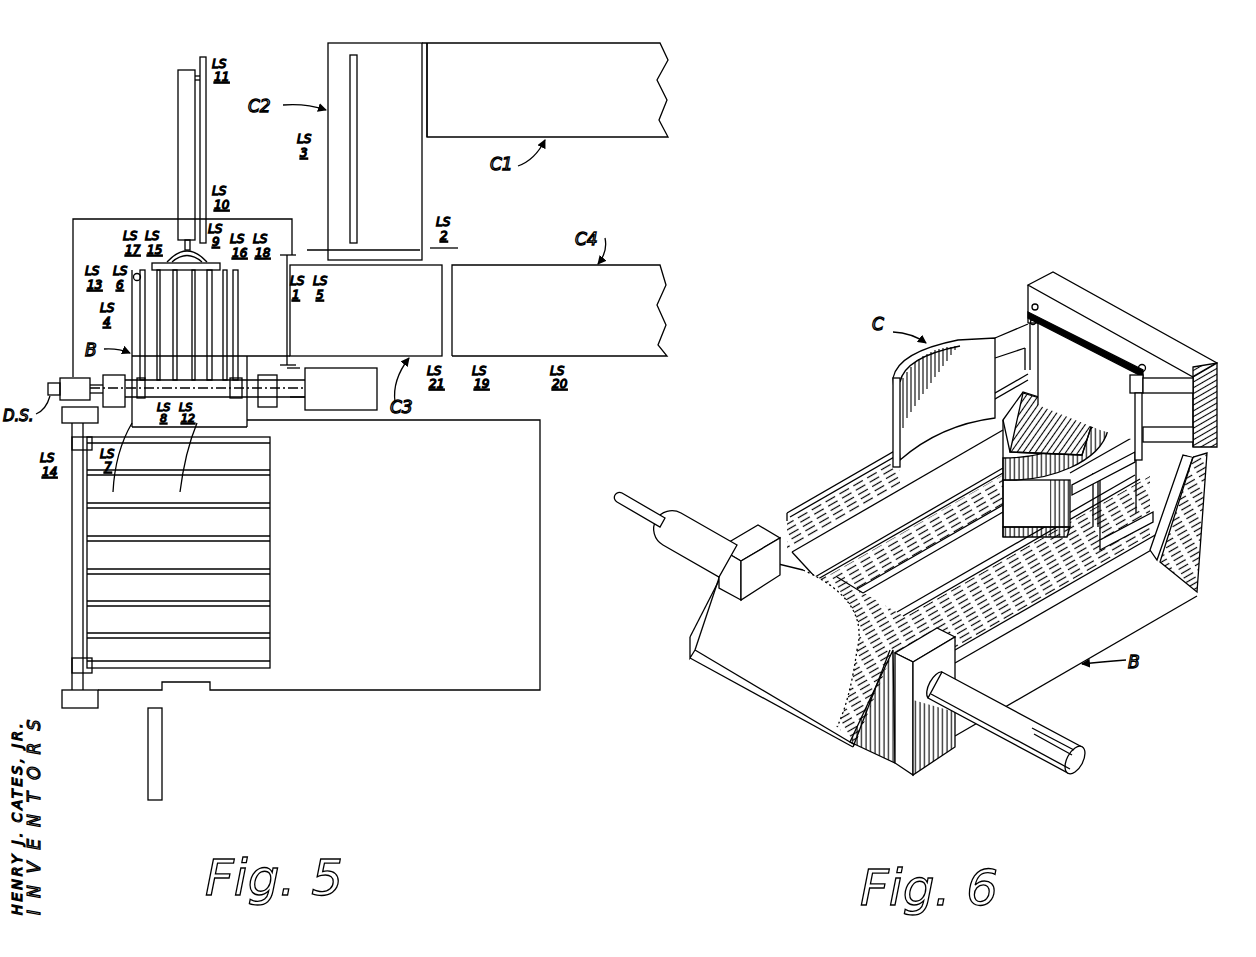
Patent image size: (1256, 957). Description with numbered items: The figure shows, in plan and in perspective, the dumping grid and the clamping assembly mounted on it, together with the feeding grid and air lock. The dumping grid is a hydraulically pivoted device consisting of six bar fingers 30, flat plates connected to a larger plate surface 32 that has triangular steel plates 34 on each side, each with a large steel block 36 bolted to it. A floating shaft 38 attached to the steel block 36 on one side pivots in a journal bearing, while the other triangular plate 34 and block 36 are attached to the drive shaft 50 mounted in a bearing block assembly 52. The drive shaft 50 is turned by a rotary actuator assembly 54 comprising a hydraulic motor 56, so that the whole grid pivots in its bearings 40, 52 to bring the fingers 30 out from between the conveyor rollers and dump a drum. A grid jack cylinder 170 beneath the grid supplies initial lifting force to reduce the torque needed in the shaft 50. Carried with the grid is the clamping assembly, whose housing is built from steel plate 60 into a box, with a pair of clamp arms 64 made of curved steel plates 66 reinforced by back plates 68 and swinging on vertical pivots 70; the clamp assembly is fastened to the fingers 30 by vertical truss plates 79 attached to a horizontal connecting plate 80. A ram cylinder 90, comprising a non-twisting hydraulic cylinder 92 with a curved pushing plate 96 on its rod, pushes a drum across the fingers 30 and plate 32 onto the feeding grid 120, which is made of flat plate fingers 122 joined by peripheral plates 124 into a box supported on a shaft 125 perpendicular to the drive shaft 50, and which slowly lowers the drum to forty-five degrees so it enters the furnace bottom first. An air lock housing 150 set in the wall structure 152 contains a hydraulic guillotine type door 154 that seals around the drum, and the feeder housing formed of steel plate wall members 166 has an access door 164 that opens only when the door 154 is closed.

In FIG. 5, the bar fingers 30 is at (212, 313).
In FIG. 6, the bar fingers 30 is at (1073, 596).
In FIG. 6, the plate surface 32 is at (774, 650).
In FIG. 6, the triangular steel plates 34 is at (712, 606).
In FIG. 6, the steel block 36 is at (738, 537).
In FIG. 5, the floating shaft 38 is at (100, 377).
In FIG. 6, the floating shaft 38 is at (677, 518).
In FIG. 5, the bearing 40 is at (141, 408).
In FIG. 5, the drive shaft 50 is at (267, 407).
In FIG. 6, the drive shaft 50 is at (1025, 725).
In FIG. 5, the bearing block assembly 52 is at (233, 407).
In FIG. 5, the rotary actuator assembly 54 is at (360, 413).
In FIG. 5, the hydraulic motor 56 is at (341, 389).
In FIG. 6, the steel plate 60 is at (1106, 364).
In FIG. 6, the clamp arms 64 is at (888, 415).
In FIG. 6, the curved steel plates 66 is at (1000, 437).
In FIG. 6, the back plates 68 is at (893, 378).
In FIG. 6, the pivots 70 is at (1140, 364).
In FIG. 6, the truss plates 79 is at (1195, 499).
In FIG. 6, the horizontal connecting plate 80 is at (1133, 494).
In FIG. 5, the ram cylinder 90 is at (176, 122).
In FIG. 5, the hydraulic cylinder 92 is at (185, 143).
In FIG. 5, the curved pushing plate 96 is at (208, 252).
In FIG. 5, the feeding grid 120 is at (200, 559).
In FIG. 5, the flat plate fingers 122 is at (244, 533).
In FIG. 5, the peripheral plates 124 is at (253, 448).
In FIG. 5, the shaft 125 is at (78, 558).
In FIG. 5, the air lock housing 150 is at (295, 369).
In FIG. 5, the wall structure 152 is at (467, 420).
In FIG. 5, the guillotine type door 154 is at (289, 337).
In FIG. 5, the access door 164 is at (194, 462).
In FIG. 5, the steel plate wall members 166 is at (127, 462).
In FIG. 5, the grid jack cylinder 170 is at (134, 280).